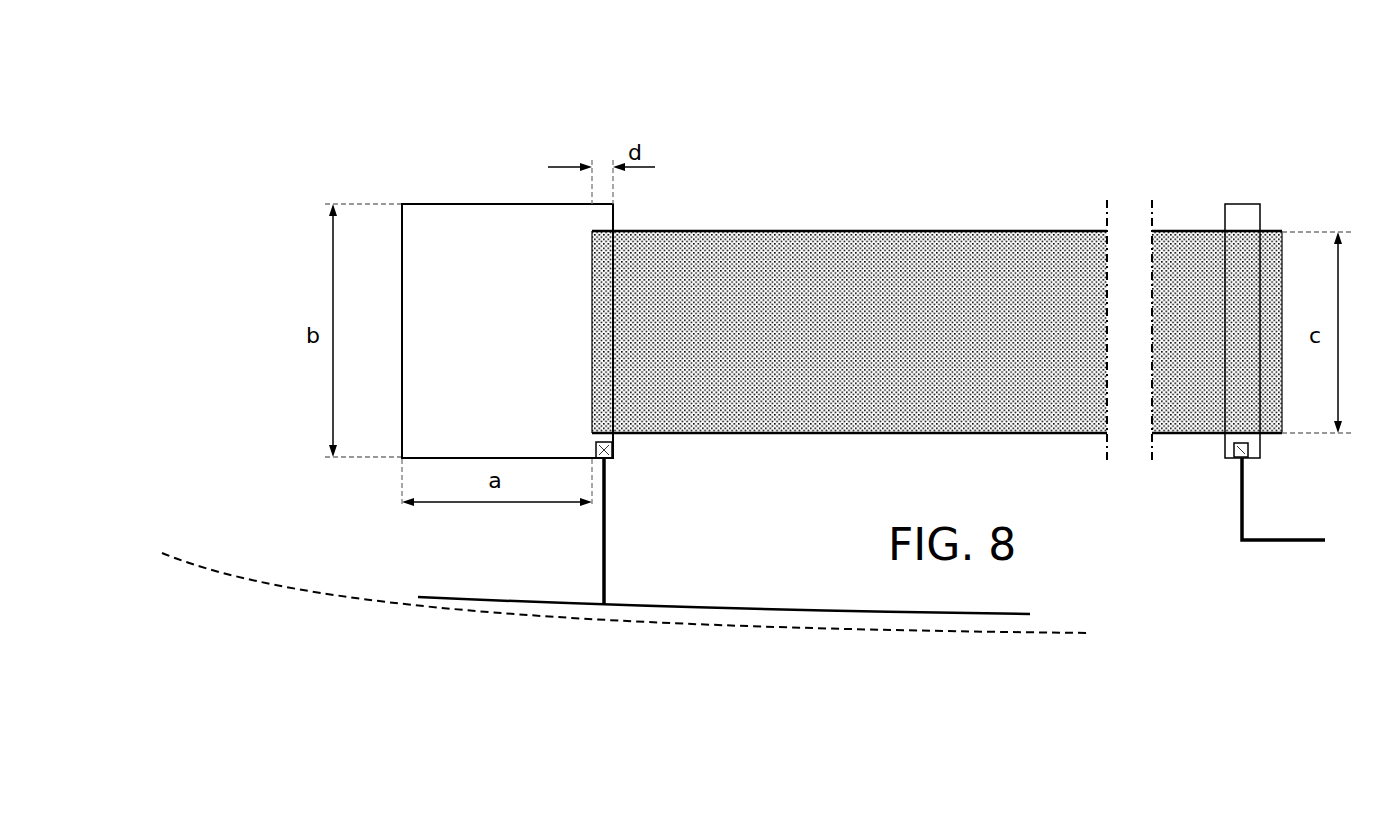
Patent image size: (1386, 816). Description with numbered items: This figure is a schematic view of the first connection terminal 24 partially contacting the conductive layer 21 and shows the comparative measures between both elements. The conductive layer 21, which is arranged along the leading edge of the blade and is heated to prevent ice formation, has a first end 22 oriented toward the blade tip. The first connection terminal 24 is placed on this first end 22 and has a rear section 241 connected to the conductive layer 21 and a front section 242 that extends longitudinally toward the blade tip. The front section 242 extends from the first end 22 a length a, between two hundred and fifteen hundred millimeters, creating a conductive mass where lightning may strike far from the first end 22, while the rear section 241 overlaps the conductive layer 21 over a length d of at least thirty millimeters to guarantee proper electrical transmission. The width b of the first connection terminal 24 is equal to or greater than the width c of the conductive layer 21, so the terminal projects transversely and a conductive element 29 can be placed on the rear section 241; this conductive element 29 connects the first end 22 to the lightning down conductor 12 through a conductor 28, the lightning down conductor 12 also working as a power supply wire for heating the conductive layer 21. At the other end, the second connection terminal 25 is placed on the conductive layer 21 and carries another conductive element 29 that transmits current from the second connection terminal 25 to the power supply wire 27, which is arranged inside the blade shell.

The lightning down conductor 12 is at (510, 600).
The conductive layer 21 is at (848, 287).
The first end 22 is at (589, 328).
The first connection terminal 24 is at (502, 228).
The rear section 241 is at (604, 352).
The front section 242 is at (460, 333).
The second connection terminal 25 is at (1240, 228).
The power supply wire 27 is at (1255, 538).
The conductor 28 is at (606, 543).
The conductive element 29 is at (612, 460).